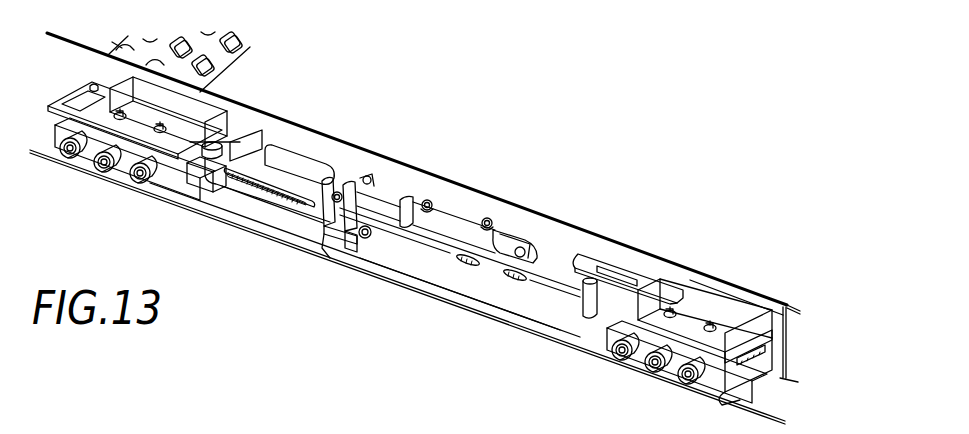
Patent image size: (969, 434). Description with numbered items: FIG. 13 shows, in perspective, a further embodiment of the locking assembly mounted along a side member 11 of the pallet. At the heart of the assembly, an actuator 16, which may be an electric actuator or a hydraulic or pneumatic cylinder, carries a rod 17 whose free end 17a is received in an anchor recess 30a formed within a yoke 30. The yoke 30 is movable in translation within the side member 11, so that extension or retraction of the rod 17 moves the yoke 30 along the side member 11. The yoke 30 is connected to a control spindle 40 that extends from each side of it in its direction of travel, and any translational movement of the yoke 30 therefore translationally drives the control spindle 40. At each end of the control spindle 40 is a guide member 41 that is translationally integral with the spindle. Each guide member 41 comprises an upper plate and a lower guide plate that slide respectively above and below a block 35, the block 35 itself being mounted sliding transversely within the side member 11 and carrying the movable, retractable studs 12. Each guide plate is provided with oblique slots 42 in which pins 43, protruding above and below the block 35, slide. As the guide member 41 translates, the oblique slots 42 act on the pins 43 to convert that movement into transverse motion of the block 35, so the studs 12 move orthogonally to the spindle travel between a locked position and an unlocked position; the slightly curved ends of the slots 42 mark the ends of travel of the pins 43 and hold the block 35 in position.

The side member 11 is at (566, 212).
The studs 12 is at (66, 160).
The actuator 16 is at (457, 225).
The rod 17 is at (390, 203).
The free end 17a is at (360, 176).
The yoke 30 is at (321, 231).
The anchor recess 30a is at (350, 240).
The block 35 is at (200, 178).
The control spindle 40 is at (250, 206).
The guide member 41 is at (80, 84).
The oblique slots 42 is at (93, 85).
The pins 43 is at (165, 127).